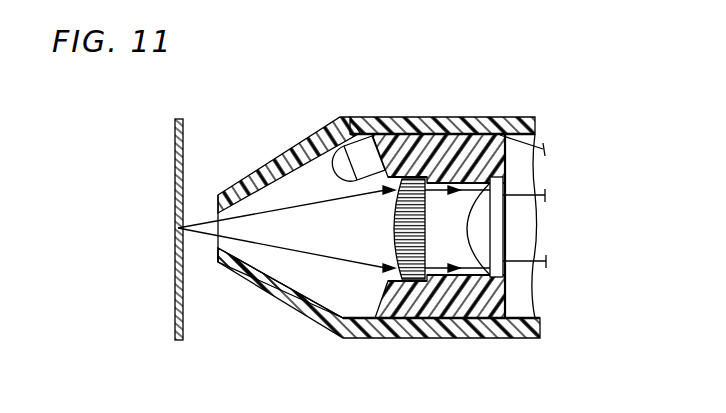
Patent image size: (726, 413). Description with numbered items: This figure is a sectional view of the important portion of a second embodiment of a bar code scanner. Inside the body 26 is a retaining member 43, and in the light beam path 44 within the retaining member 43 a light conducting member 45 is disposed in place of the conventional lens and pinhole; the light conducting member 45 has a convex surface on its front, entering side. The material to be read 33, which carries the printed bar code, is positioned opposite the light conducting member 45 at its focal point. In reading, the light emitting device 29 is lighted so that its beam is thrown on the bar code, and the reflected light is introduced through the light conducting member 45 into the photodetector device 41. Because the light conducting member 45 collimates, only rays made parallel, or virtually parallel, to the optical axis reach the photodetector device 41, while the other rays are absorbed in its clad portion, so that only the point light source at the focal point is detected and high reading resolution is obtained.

The body 26 is at (294, 143).
The light emitting device 29 is at (353, 140).
The material to be read 33 is at (184, 128).
The photodetector device 41 is at (500, 229).
The retaining member 43 is at (481, 302).
The light beam path 44 is at (465, 264).
The light conducting member 45 is at (417, 266).